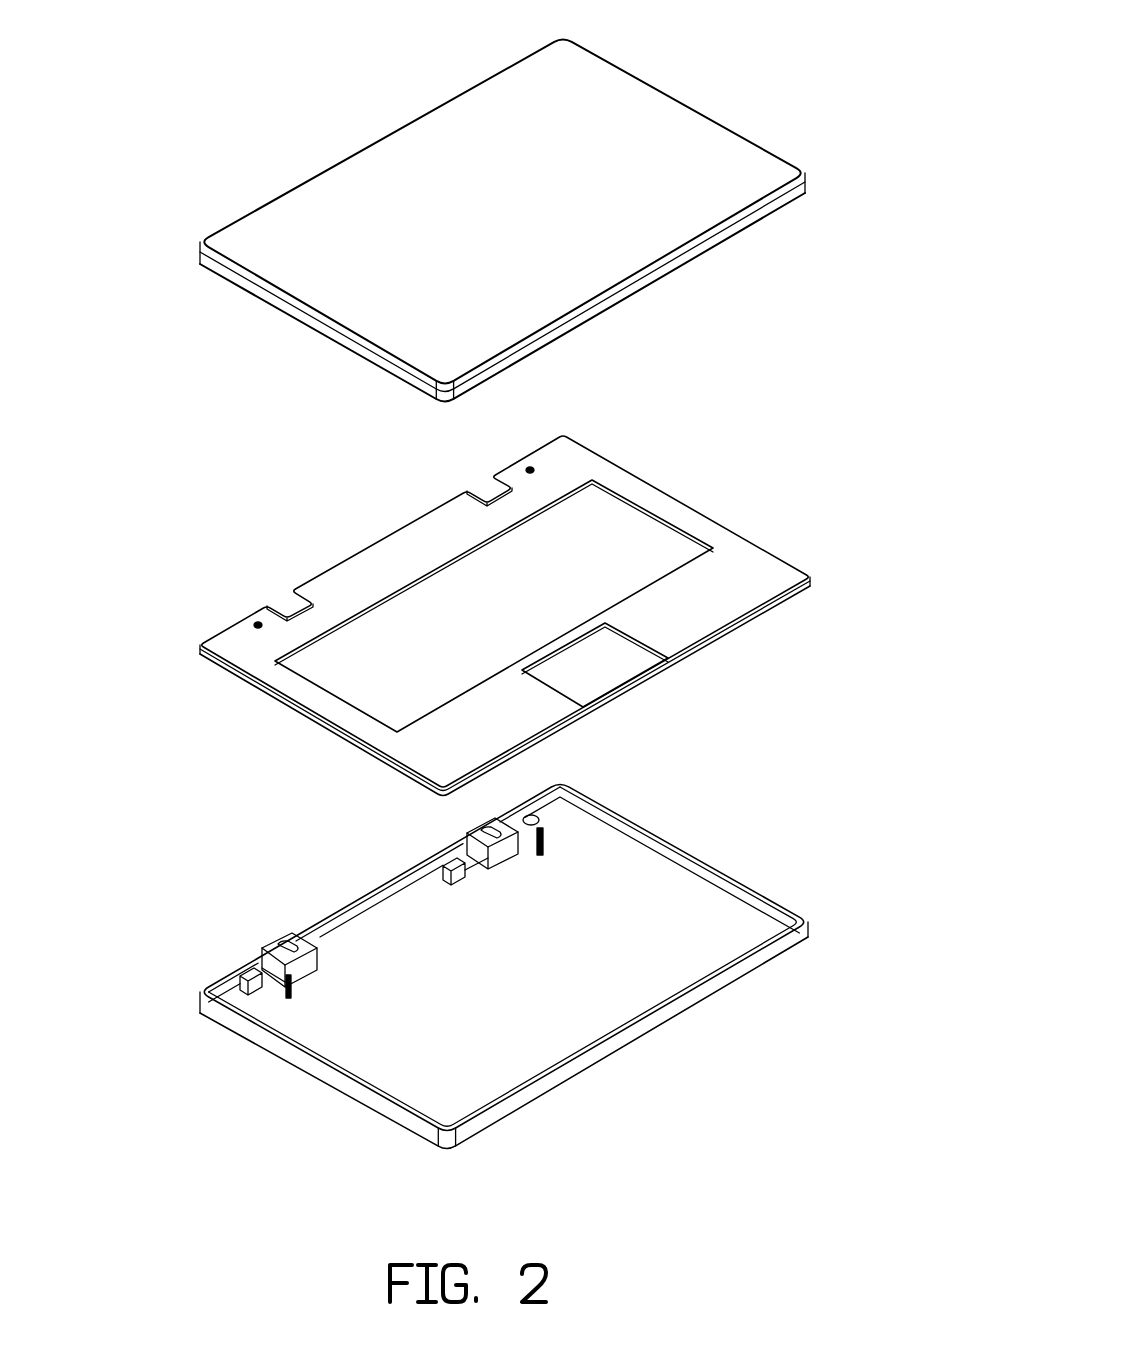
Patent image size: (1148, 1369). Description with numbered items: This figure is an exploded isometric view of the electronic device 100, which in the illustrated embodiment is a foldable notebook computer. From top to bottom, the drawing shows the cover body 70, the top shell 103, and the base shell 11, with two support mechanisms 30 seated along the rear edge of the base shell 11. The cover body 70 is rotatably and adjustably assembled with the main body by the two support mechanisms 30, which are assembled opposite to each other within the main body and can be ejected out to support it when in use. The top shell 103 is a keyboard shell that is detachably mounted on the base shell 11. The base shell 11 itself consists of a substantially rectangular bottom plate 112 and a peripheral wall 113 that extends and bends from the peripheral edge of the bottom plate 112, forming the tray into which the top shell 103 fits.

The electronic device 100 is at (258, 104).
The cover body 70 is at (297, 233).
The top shell 103 is at (752, 565).
The base shell 11 is at (790, 777).
The peripheral wall 113 is at (667, 847).
The bottom plate 112 is at (702, 917).
The support mechanism 30 is at (274, 936).